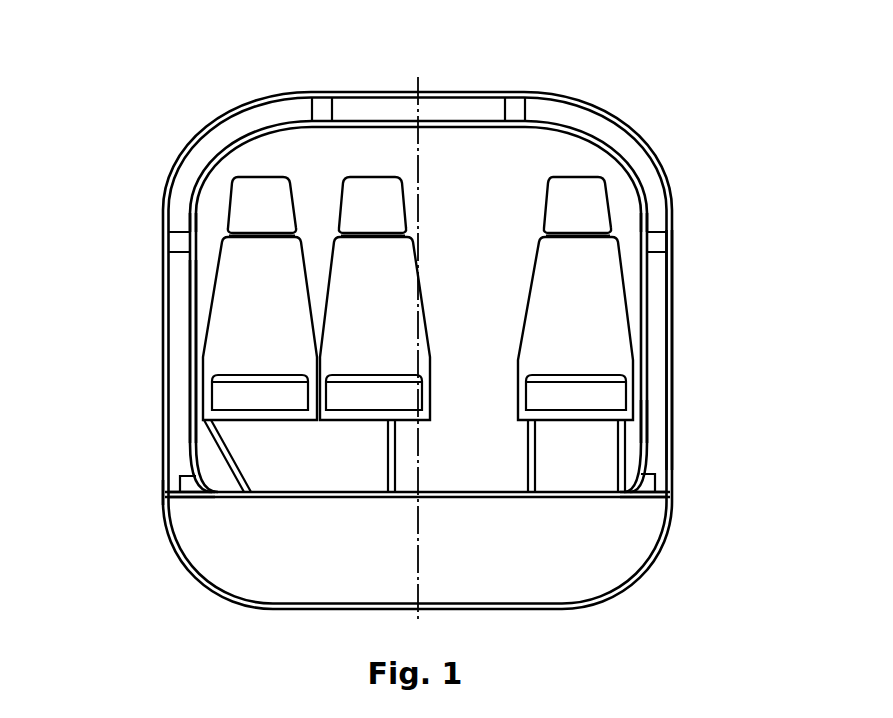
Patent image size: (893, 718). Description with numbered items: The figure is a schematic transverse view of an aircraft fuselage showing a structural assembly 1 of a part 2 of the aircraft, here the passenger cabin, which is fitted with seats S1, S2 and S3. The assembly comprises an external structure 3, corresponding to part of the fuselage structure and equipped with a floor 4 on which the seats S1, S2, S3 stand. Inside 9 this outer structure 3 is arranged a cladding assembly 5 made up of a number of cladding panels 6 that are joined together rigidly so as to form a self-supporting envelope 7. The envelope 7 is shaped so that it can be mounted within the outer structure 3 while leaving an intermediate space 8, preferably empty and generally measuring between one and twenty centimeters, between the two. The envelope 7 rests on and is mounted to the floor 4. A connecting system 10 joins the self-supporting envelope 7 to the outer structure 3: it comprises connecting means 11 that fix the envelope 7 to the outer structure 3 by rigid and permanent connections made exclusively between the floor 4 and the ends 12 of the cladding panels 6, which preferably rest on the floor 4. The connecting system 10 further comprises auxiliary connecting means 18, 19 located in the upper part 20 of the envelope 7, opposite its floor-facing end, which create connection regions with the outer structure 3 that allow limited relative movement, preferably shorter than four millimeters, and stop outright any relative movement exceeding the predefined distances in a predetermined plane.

The structural assembly 1 is at (170, 590).
The part of an aircraft 2 is at (548, 157).
The external structure 3 is at (672, 319).
The floor 4 is at (437, 497).
The cladding assembly 5 is at (583, 125).
The cladding panel 6 is at (180, 335).
The self-supporting envelope 7 is at (187, 427).
The intermediate space 8 is at (657, 205).
The inside of the outer structure 9 is at (466, 168).
The connecting system 10 is at (158, 496).
The connecting means 11 is at (190, 488).
The ends of cladding panels 12 is at (215, 506).
The auxiliary connecting means 18 is at (177, 245).
The auxiliary connecting means 19 is at (322, 110).
The upper part of the self-supporting envelope 20 is at (180, 215).
The seat S1 is at (292, 272).
The seat S2 is at (405, 275).
The seat S3 is at (540, 313).